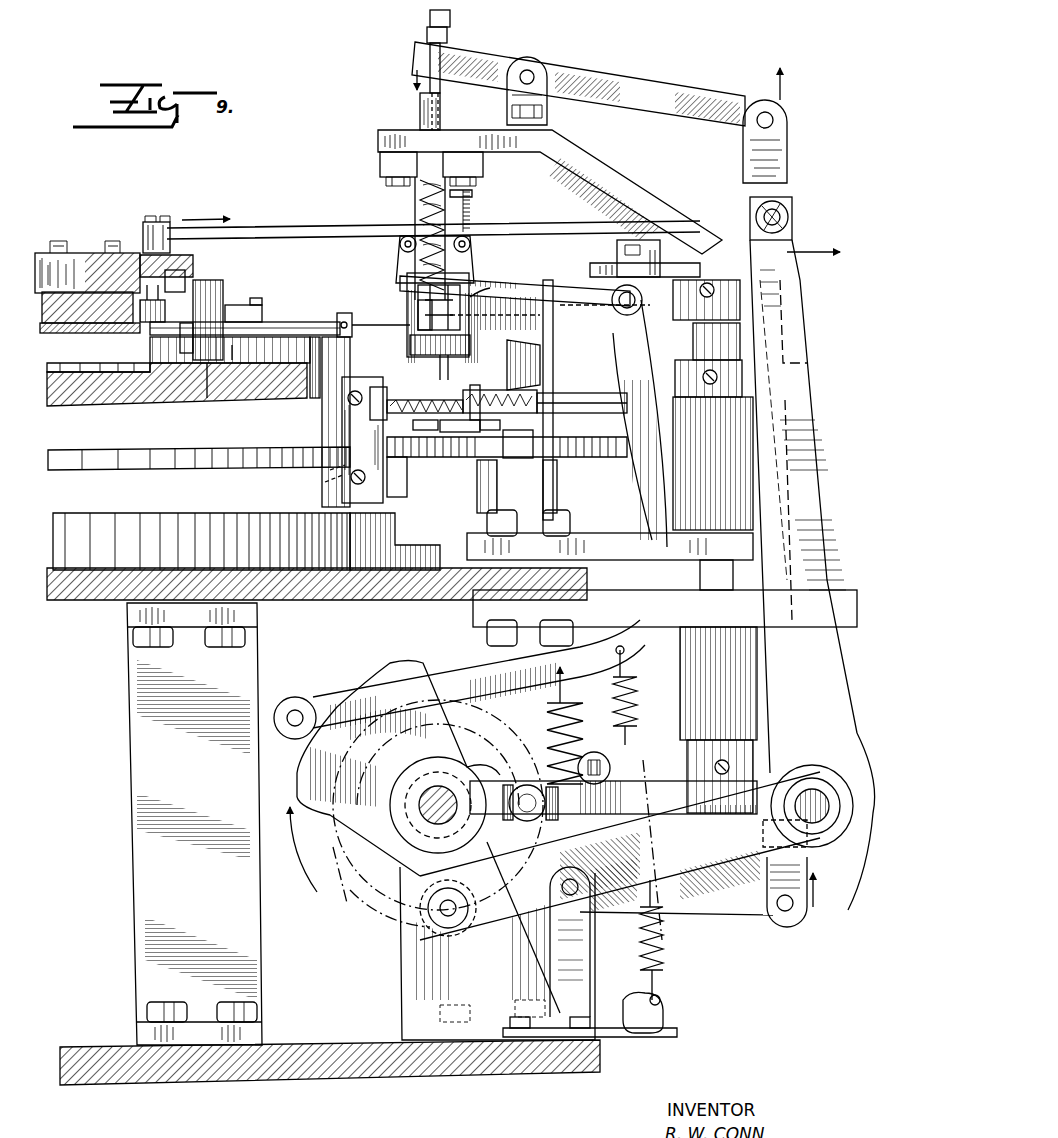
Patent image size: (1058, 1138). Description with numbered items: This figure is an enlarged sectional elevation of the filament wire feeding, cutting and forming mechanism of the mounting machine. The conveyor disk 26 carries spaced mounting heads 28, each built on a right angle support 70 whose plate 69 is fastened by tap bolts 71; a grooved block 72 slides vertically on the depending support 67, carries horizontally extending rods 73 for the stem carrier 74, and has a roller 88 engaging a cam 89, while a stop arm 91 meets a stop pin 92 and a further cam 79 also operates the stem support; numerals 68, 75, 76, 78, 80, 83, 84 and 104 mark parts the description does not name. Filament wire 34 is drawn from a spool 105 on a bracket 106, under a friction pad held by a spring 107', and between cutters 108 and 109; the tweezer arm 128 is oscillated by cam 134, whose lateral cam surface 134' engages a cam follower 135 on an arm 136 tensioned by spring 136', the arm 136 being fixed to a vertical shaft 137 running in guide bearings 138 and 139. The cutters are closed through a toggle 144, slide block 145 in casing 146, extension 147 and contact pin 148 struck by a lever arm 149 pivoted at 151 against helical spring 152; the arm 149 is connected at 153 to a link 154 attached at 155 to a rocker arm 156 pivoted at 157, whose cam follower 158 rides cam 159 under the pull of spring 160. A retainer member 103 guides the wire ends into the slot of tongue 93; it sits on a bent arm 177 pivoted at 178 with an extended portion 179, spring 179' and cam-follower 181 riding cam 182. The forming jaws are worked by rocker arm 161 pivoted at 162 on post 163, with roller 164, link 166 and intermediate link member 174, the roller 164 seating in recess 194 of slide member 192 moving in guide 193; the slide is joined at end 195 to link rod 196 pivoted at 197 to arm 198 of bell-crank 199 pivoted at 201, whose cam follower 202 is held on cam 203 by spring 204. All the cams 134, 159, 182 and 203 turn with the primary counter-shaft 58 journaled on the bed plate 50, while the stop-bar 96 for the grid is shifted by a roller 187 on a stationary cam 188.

The disk 26 is at (112, 406).
The mounting heads 28 is at (310, 322).
The filament wire 34 is at (440, 360).
The bed plate 50 is at (288, 1072).
The primary counter-shaft 58 is at (445, 800).
The support 67 is at (320, 424).
The bearing housing 68 is at (378, 376).
The plate 69 is at (256, 360).
The right angle support 70 is at (314, 400).
The tap bolts 71 is at (240, 365).
The grooved block 72 is at (395, 398).
The horizontally extending rods 73 is at (603, 398).
The stem carrier 74 is at (452, 425).
The threaded sleeve 75 is at (488, 392).
The collar 76 is at (475, 385).
The gear 78 is at (545, 452).
The cam 79 is at (233, 458).
The bevel gear 80 is at (540, 360).
The nut 83 is at (425, 432).
The nut 84 is at (475, 432).
The roller 88 is at (408, 497).
The cam 89 is at (190, 512).
The arm 91 is at (330, 466).
The stop pin 92 is at (325, 480).
The tongue 93 is at (353, 316).
The stop-bar 96 is at (362, 320).
The retainer member 103 is at (407, 285).
The table plate 104 is at (80, 600).
The spool 105 is at (412, 348).
The bracket 106 is at (553, 320).
The spring 107' is at (494, 211).
The cutter 108 is at (418, 310).
The cutter 109 is at (480, 292).
The arm 128 is at (592, 268).
The cam 134 is at (390, 908).
The lateral cam surface 134' is at (336, 892).
The cam follower 135 is at (527, 785).
The arm 136 is at (613, 846).
The spring 136' is at (601, 755).
The vertical shaft 137 is at (735, 590).
The guide bearing 138 is at (690, 702).
The guide bearing 139 is at (735, 482).
The toggle 144 is at (416, 222).
The slide block 145 is at (412, 190).
The casing 146 is at (470, 192).
The extension 147 is at (425, 113).
The contact pin 148 is at (440, 90).
The lever arm 149 is at (610, 76).
The pivot 151 is at (530, 73).
The helical spring 152 is at (420, 198).
The pivot 153 is at (773, 120).
The link 154 is at (807, 363).
The pivot 155 is at (790, 912).
The rocker arm 156 is at (693, 905).
The pivot 157 is at (593, 912).
The cam follower 158 is at (420, 911).
The cam 159 is at (476, 722).
The spring 160 is at (508, 912).
The rocker arm 161 is at (146, 303).
The pivot 162 is at (225, 285).
The post 163 is at (206, 400).
The roller 164 is at (165, 284).
The link 166 is at (225, 300).
The intermediate link member 174 is at (263, 308).
The bent arm 177 is at (485, 290).
The pivot 178 is at (625, 316).
The extended portion 179 is at (585, 631).
The spring 179' is at (645, 695).
The cam-follower 181 is at (276, 714).
The cam 182 is at (300, 780).
The roller 187 is at (128, 333).
The stationary cam 188 is at (88, 335).
The slide member 192 is at (90, 262).
The guide 193 is at (70, 252).
The recess 194 is at (192, 258).
The end 195 is at (168, 222).
The link rod 196 is at (320, 228).
The pivot 197 is at (783, 210).
The arm 198 is at (805, 432).
The bell-crank 199 is at (820, 870).
The pivot 201 is at (826, 818).
The cam follower 202 is at (490, 925).
The cam 203 is at (316, 849).
The spring 204 is at (578, 725).